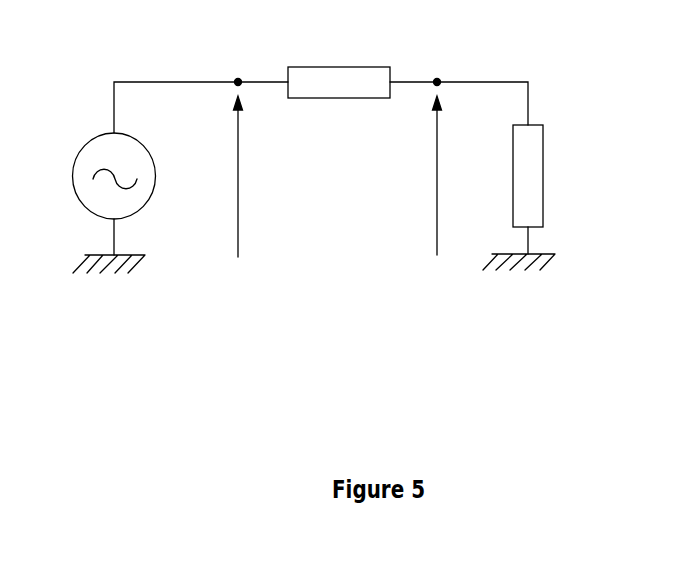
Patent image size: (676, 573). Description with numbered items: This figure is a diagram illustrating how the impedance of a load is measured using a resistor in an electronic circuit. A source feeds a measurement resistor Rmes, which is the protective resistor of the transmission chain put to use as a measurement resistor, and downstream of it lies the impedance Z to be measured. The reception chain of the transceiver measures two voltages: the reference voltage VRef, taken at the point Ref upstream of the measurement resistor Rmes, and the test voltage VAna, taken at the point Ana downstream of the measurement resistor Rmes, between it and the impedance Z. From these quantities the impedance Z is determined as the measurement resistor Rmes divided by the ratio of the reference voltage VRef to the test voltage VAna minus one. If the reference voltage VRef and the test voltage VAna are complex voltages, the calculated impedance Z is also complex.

The point Ref is at (239, 69).
The point Ana is at (440, 69).
The reference voltage VRef is at (254, 176).
The test voltage VAna is at (454, 175).
The measurement resistor Rmes is at (339, 82).
The impedance to be measured Z is at (593, 176).